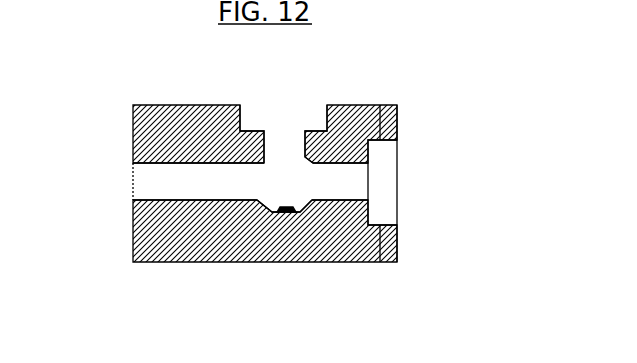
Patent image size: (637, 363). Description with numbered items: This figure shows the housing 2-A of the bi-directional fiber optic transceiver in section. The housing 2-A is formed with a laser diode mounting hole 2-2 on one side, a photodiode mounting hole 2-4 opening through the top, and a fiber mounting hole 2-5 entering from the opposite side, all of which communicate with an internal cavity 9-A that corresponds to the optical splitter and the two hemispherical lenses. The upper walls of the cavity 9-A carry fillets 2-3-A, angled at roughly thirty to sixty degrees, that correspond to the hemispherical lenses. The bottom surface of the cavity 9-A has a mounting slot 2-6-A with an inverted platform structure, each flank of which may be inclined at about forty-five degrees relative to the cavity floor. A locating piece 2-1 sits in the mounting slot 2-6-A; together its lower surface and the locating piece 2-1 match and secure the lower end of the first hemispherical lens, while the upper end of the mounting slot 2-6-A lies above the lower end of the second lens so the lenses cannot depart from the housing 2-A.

The housing 2-A is at (143, 144).
The fillets 2-3-A is at (313, 157).
The photodiode mounting hole 2-4 is at (265, 123).
The laser diode mounting hole 2-2 is at (470, 173).
The fiber mounting hole 2-5 is at (147, 182).
The mounting slot 2-6-A is at (265, 210).
The internal cavity 9-A is at (282, 190).
The locating piece 2-1 is at (284, 214).